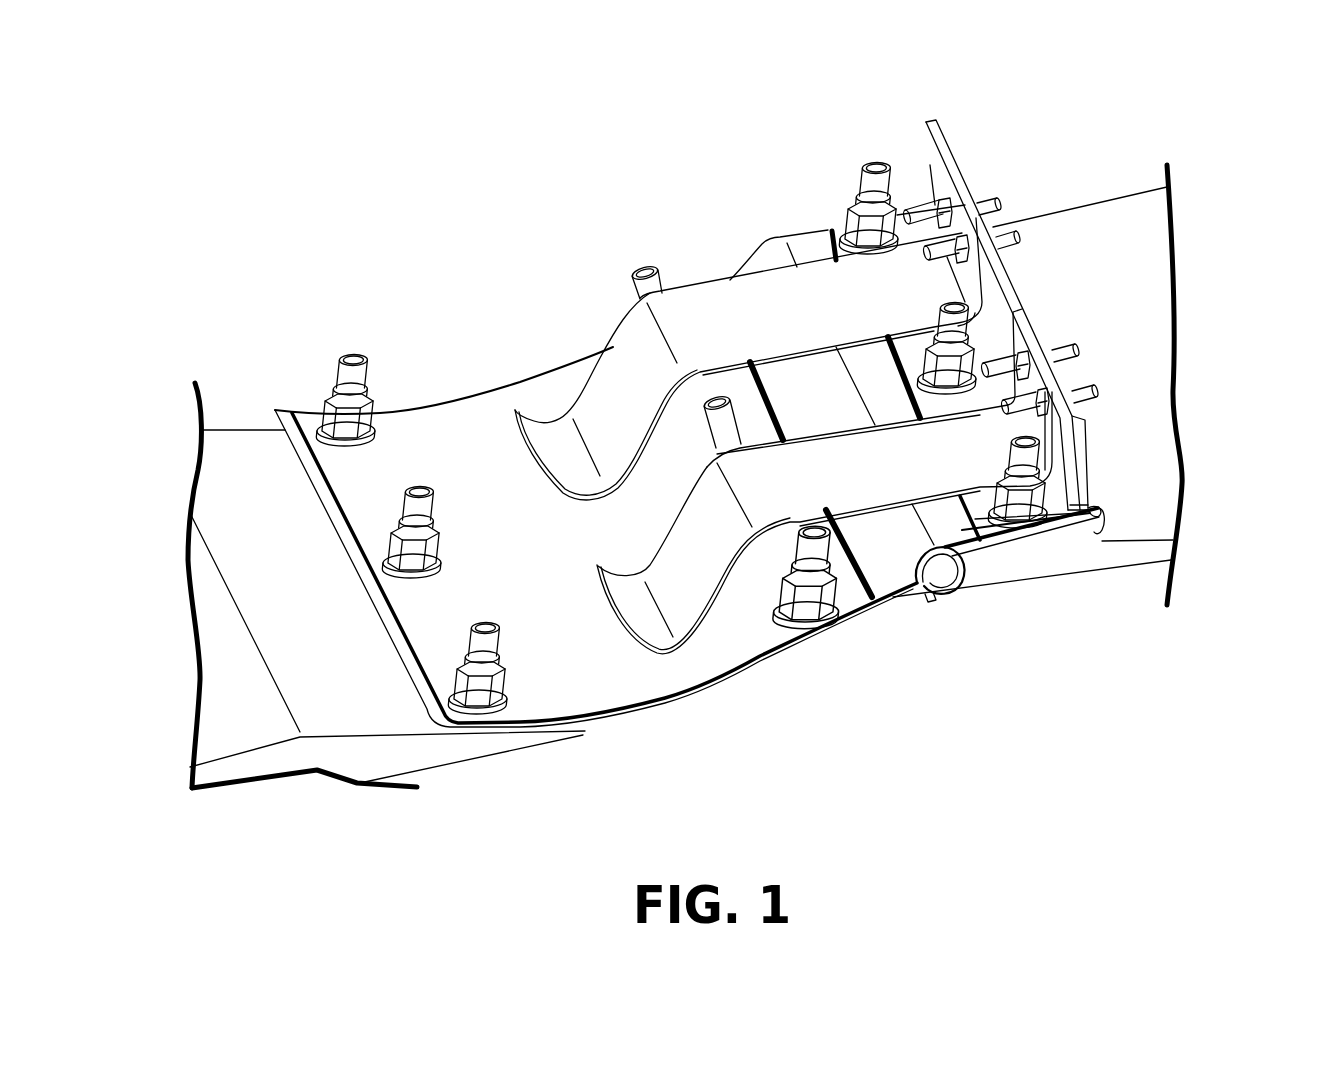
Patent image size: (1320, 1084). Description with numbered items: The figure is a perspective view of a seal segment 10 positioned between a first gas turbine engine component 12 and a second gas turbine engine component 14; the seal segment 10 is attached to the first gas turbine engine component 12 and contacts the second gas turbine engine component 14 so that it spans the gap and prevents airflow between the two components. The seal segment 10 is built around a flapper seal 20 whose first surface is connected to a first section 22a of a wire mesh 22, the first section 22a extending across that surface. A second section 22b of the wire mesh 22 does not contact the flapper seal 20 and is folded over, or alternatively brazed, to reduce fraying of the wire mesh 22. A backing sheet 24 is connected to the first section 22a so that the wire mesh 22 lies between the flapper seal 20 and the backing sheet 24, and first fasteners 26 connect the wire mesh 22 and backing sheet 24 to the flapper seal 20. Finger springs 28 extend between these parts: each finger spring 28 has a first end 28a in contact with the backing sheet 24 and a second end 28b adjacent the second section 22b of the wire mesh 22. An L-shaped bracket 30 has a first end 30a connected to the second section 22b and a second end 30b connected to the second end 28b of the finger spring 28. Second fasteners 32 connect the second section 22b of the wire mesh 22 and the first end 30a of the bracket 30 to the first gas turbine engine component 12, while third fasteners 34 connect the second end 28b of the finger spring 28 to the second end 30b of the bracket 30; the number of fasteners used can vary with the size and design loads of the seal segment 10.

The seal segment 10 is at (497, 198).
The first gas turbine engine component 12 is at (1073, 235).
The second gas turbine engine component 14 is at (252, 460).
The flapper seal 20 is at (930, 593).
The wire mesh 22 is at (768, 240).
The first section of wire mesh 22a is at (880, 575).
The second section of wire mesh 22b is at (1073, 543).
The backing sheet 24 is at (598, 697).
The first fasteners 26 is at (813, 600).
The finger spring 28 is at (623, 356).
The first end of finger spring 28a is at (608, 552).
The second end of finger spring 28b is at (937, 165).
The bracket 30 is at (1086, 473).
The first end of bracket 30a is at (993, 537).
The second end of bracket 30b is at (1086, 452).
The second fasteners 32 is at (1023, 503).
The third fasteners 34 is at (918, 213).